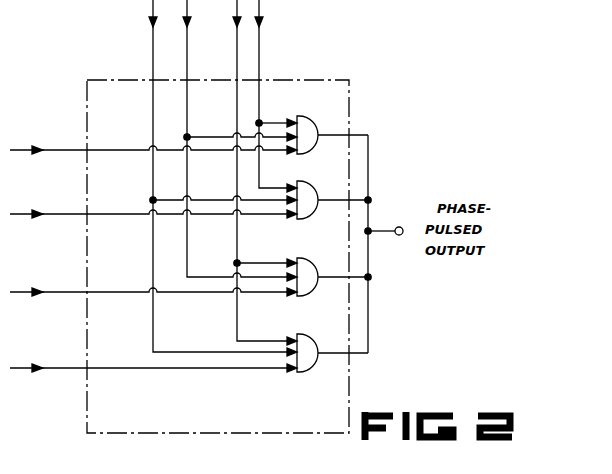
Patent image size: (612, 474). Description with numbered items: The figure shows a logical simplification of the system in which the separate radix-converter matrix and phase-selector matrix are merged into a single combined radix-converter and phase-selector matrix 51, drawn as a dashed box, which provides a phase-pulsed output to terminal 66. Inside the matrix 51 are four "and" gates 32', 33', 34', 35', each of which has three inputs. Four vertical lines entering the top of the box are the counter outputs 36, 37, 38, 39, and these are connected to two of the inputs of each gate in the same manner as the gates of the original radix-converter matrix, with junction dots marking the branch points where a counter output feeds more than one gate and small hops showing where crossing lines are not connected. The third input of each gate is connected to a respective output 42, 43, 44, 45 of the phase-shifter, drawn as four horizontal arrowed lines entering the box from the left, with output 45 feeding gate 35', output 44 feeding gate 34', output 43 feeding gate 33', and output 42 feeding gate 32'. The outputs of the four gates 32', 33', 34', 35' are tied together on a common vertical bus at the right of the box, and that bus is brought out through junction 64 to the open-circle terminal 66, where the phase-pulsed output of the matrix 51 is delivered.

The matrix 51 is at (344, 425).
The counter output 39 is at (150, 23).
The counter output 38 is at (189, 22).
The counter output 37 is at (236, 25).
The counter output 36 is at (262, 25).
The phase-shifter output 45 is at (38, 148).
The phase-shifter output 44 is at (38, 212).
The phase-shifter output 43 is at (38, 290).
The phase-shifter output 42 is at (38, 366).
The "and" gate 35' is at (324, 126).
The "and" gate 34' is at (326, 191).
The "and" gate 33' is at (332, 266).
The "and" gate 32' is at (332, 344).
The output junction 64 is at (381, 230).
The terminal 66 is at (396, 238).